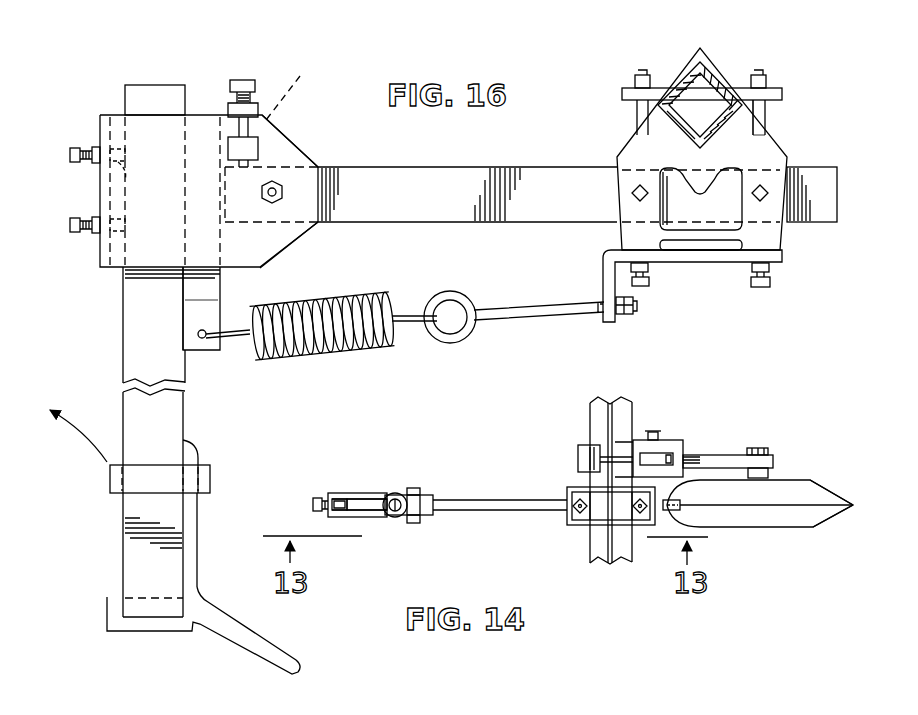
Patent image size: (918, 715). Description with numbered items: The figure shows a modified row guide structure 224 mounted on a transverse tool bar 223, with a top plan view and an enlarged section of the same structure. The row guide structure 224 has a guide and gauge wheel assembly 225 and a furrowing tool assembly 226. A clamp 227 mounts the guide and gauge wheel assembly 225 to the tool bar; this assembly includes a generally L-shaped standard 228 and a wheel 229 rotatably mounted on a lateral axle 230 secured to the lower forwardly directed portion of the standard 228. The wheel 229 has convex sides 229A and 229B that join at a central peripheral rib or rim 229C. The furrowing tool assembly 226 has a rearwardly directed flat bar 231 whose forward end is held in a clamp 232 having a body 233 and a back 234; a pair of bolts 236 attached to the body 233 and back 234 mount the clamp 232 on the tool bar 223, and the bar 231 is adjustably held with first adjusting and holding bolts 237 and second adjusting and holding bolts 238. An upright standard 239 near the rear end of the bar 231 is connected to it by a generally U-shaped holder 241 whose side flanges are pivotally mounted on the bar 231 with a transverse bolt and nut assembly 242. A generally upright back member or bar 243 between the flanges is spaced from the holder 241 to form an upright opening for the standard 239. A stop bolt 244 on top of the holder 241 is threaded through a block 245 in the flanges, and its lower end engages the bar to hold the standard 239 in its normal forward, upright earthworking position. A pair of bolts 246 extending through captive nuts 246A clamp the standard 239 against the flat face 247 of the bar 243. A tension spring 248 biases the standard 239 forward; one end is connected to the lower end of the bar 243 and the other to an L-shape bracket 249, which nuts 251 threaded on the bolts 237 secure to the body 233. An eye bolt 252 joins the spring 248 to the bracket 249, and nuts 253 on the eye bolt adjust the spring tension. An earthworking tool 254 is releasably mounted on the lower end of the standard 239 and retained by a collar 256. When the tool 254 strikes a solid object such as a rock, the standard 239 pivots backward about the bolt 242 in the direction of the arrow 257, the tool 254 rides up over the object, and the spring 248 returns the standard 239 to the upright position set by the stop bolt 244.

In FIG. 16, the transverse tool bar 223 is at (707, 88).
In FIG. 14, the transverse tool bar 223 is at (628, 400).
In FIG. 16, the row guide structure 224 is at (411, 160).
In FIG. 14, the row guide structure 224 is at (552, 450).
In FIG. 14, the guide and gauge wheel assembly 225 is at (811, 452).
In FIG. 14, the furrowing tool assembly 226 is at (467, 497).
In FIG. 14, the clamp 227 is at (673, 440).
In FIG. 14, the L-shaped standard 228 is at (715, 458).
In FIG. 14, the wheel 229 is at (772, 520).
In FIG. 14, the convex side 229A is at (832, 487).
In FIG. 14, the convex side 229B is at (832, 528).
In FIG. 14, the central peripheral rib 229C is at (853, 508).
In FIG. 14, the lateral axle 230 is at (768, 476).
In FIG. 16, the flat bar 231 is at (553, 180).
In FIG. 14, the flat bar 231 is at (507, 506).
In FIG. 16, the clamp 232 is at (780, 143).
In FIG. 14, the clamp 232 is at (578, 528).
In FIG. 16, the body 233 is at (634, 153).
In FIG. 16, the back 234 is at (685, 62).
In FIG. 16, the bolts 236 is at (762, 115).
In FIG. 14, the bolts 236 is at (578, 505).
In FIG. 16, the first adjusting and holding bolts 237 is at (753, 286).
In FIG. 16, the second adjusting and holding bolts 238 is at (768, 193).
In FIG. 16, the upright standard 239 is at (142, 333).
In FIG. 14, the upright standard 239 is at (361, 502).
In FIG. 16, the holder 241 is at (100, 112).
In FIG. 14, the holder 241 is at (350, 490).
In FIG. 16, the transverse bolt and nut assembly 242 is at (278, 183).
In FIG. 14, the transverse bolt and nut assembly 242 is at (416, 489).
In FIG. 16, the back member 243 is at (215, 297).
In FIG. 16, the stop bolt 244 is at (253, 82).
In FIG. 14, the stop bolt 244 is at (397, 516).
In FIG. 16, the block 245 is at (302, 87).
In FIG. 16, the bolts 246 is at (75, 222).
In FIG. 14, the bolts 246 is at (312, 501).
In FIG. 16, the captive nuts 246A is at (127, 182).
In FIG. 16, the flat face 247 is at (217, 300).
In FIG. 16, the tension spring 248 is at (342, 340).
In FIG. 16, the L-shape bracket 249 is at (605, 277).
In FIG. 16, the nuts 251 is at (752, 266).
In FIG. 16, the eye bolt 252 is at (545, 313).
In FIG. 16, the nuts 253 is at (633, 313).
In FIG. 16, the earthworking tool 254 is at (188, 561).
In FIG. 16, the collar 256 is at (213, 475).
In FIG. 16, the arrow 257 is at (88, 455).